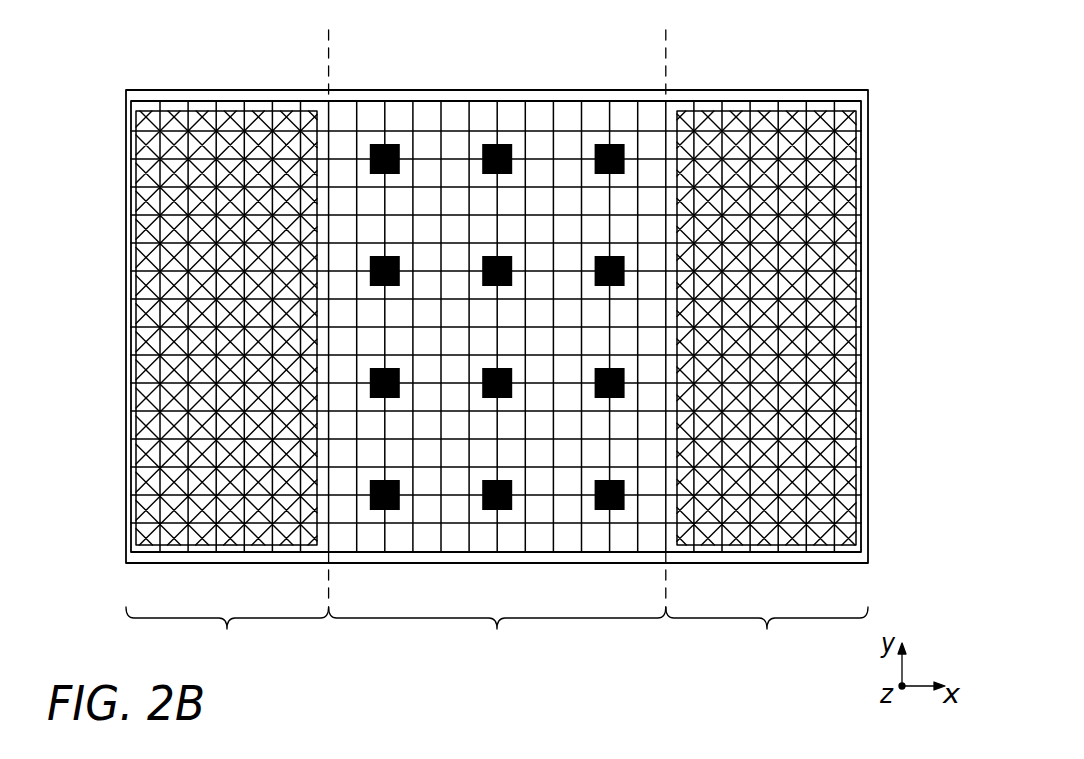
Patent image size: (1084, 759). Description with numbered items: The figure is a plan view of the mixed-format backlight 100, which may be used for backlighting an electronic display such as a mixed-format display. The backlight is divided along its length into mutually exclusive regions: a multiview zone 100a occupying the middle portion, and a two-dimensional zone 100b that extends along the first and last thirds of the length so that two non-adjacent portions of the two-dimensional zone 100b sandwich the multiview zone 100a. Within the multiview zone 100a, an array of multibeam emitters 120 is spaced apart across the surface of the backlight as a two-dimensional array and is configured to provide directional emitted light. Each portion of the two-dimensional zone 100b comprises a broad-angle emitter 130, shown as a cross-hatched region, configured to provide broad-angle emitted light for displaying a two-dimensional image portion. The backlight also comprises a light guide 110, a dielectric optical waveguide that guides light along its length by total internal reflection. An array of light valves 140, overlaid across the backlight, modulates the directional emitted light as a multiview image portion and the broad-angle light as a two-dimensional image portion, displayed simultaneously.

The mixed-format backlight 100 is at (838, 40).
The light guide 110 is at (836, 90).
The multibeam emitters 120 is at (488, 142).
The broad-angle emitter 130 is at (226, 100).
The array of light valves 140 is at (545, 90).
The multiview zone 100a is at (497, 351).
The two-dimensional (2D) zone 100b is at (497, 639).